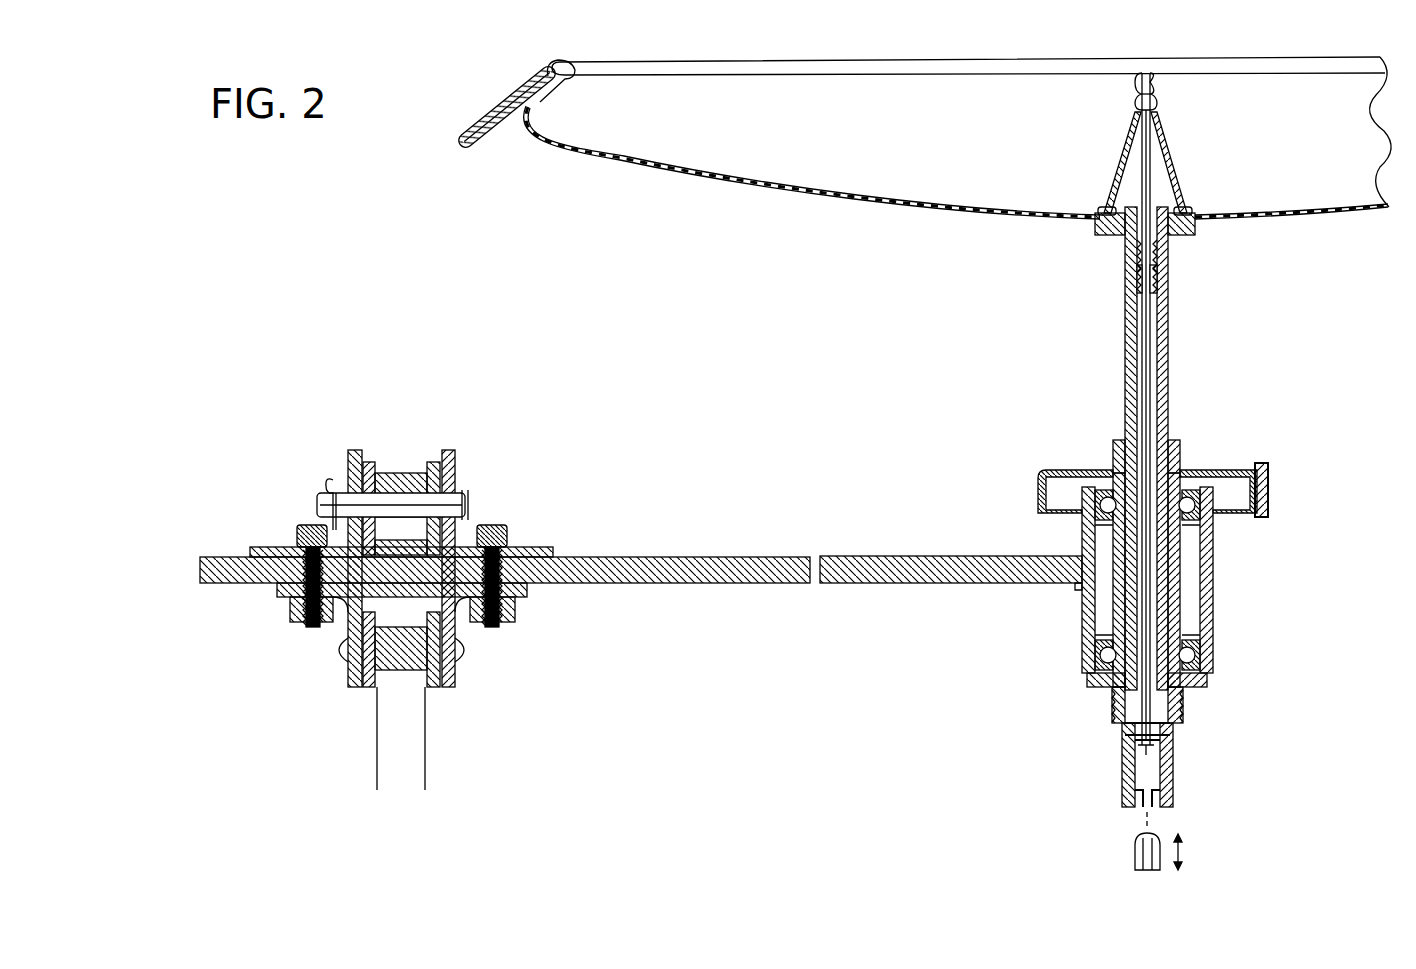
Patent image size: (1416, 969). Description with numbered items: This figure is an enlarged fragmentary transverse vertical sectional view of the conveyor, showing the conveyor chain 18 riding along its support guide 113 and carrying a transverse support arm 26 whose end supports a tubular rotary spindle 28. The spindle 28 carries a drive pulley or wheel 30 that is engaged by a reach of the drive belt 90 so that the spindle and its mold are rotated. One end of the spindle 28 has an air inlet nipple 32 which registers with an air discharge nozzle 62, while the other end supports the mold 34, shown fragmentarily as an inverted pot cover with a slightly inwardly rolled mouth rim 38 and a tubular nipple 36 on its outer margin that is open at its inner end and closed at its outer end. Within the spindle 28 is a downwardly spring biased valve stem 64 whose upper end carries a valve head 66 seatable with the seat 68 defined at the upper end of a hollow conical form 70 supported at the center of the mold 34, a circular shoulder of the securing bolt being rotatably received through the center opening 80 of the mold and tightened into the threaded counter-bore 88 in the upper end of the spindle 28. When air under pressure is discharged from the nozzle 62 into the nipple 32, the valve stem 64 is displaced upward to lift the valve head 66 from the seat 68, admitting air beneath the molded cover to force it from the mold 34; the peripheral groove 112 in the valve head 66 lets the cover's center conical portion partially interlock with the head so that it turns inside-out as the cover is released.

The conveyor chain 18 is at (370, 668).
The transverse support arm 26 is at (645, 585).
The rotary spindle 28 is at (1165, 377).
The drive pulley or wheel 30 is at (1212, 468).
The air inlet nipple 32 is at (1177, 767).
The mold 34 is at (1297, 222).
The tubular nipple 36 is at (493, 113).
The rolled mouth rim 38 is at (578, 79).
The air discharge nozzle 62 is at (1133, 855).
The valve stem 64 is at (1147, 352).
The valve head 66 is at (1157, 102).
The seat 68 is at (1138, 112).
The hollow conical form 70 is at (1172, 147).
The center opening 80 is at (1170, 212).
The threaded counter-bore 88 is at (1163, 278).
The drive belt 90 is at (1270, 492).
The peripheral groove 112 is at (1153, 93).
The support guide 113 is at (425, 728).